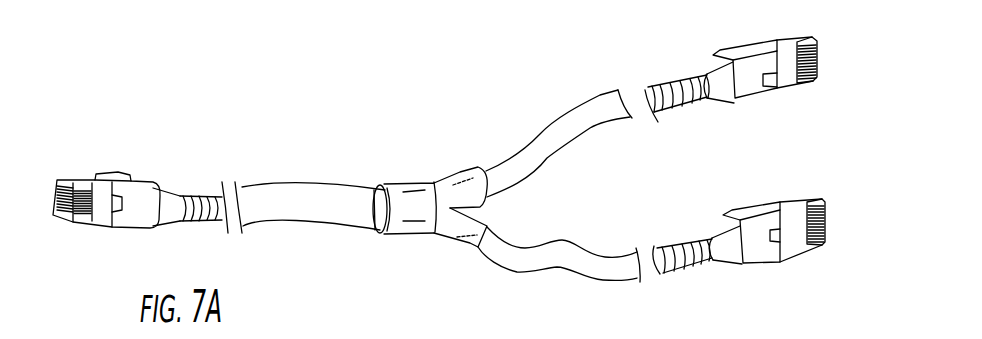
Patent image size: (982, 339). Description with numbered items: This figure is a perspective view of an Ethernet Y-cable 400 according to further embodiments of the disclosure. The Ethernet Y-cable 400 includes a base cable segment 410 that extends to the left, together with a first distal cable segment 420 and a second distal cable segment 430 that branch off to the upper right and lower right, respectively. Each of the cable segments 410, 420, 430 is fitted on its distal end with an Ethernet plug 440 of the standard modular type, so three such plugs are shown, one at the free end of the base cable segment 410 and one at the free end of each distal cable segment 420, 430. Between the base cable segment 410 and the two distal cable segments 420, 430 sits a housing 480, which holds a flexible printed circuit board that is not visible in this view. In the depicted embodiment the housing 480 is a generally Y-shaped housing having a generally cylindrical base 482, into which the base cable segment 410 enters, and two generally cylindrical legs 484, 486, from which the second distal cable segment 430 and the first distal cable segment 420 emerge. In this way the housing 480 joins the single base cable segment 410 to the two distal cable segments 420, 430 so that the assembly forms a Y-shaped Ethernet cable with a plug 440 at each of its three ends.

The Ethernet Y-cable 400 is at (455, 93).
The base cable segment 410 is at (267, 182).
The first distal cable segment 420 is at (578, 106).
The second distal cable segment 430 is at (565, 240).
The RJ-45 plug 440 is at (131, 178).
The housing 480 is at (418, 237).
The generally cylindrical base 482 is at (378, 236).
The generally cylindrical leg 484 is at (478, 252).
The generally cylindrical leg 486 is at (467, 175).